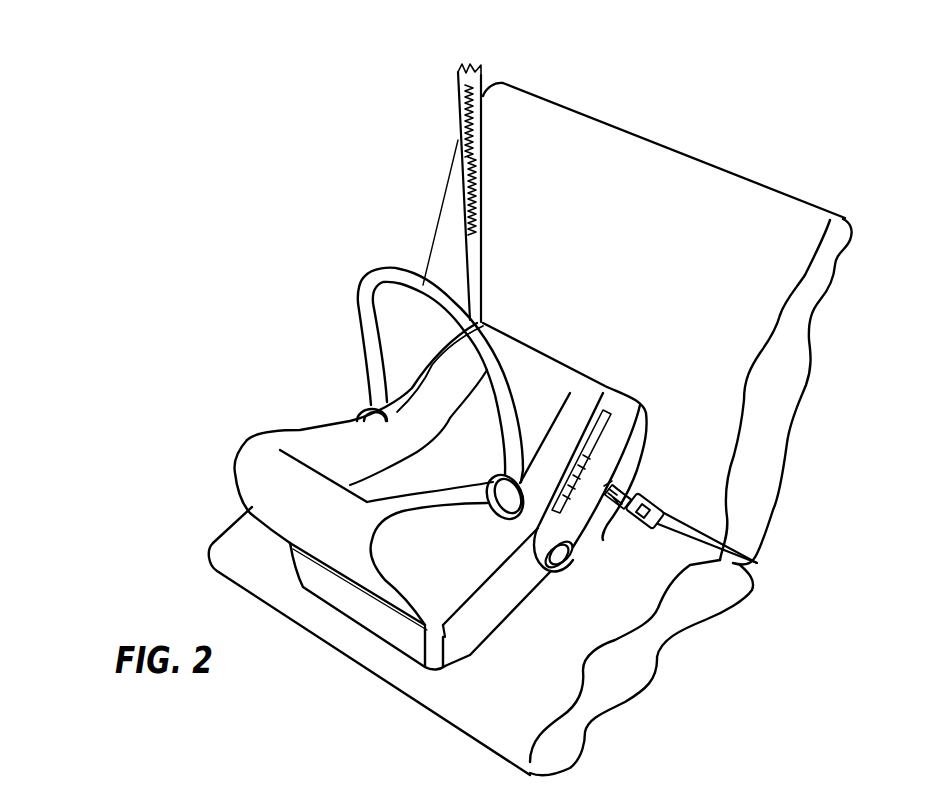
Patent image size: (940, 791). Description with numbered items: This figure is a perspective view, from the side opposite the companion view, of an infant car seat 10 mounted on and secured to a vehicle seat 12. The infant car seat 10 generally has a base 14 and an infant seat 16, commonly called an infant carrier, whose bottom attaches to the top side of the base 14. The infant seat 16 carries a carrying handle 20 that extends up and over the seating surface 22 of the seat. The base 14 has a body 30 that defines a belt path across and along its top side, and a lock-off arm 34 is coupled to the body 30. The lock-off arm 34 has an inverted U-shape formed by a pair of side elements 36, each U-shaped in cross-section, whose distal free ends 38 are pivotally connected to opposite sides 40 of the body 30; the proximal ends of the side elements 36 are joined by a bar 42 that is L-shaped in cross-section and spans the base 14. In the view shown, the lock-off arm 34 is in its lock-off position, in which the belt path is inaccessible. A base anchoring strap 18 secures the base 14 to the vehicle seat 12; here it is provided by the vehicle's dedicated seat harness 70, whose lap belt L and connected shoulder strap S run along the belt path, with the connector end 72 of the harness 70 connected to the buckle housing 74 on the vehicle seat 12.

The infant car seat 10 is at (320, 365).
The vehicle seat 12 is at (838, 360).
The base 14 is at (500, 655).
The infant seat 16 is at (250, 432).
The base anchoring strap 18 is at (626, 478).
The carrying handle 20 is at (465, 324).
The seating surface 22 is at (467, 456).
The body 30 is at (510, 607).
The lock-off arm 34 is at (640, 395).
The side elements 36 is at (598, 481).
The free end 38 is at (548, 573).
The opposite sides 40 is at (512, 560).
The bar 42 is at (614, 394).
The seat harness 70 is at (490, 250).
The connector end 72 is at (603, 540).
The buckle housing 74 is at (648, 528).
The shoulder strap S is at (482, 175).
The lap belt L is at (600, 586).